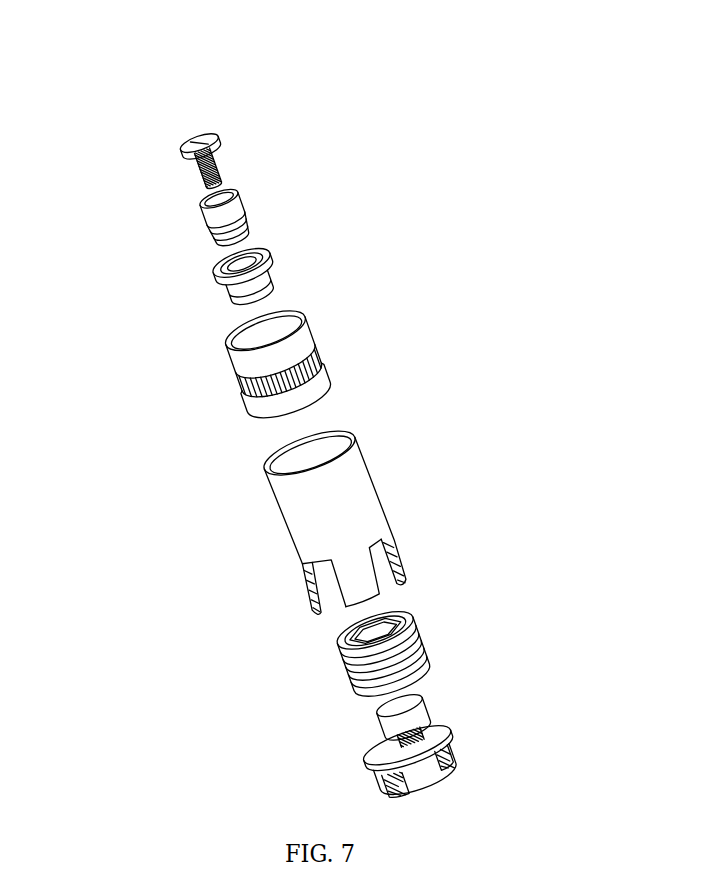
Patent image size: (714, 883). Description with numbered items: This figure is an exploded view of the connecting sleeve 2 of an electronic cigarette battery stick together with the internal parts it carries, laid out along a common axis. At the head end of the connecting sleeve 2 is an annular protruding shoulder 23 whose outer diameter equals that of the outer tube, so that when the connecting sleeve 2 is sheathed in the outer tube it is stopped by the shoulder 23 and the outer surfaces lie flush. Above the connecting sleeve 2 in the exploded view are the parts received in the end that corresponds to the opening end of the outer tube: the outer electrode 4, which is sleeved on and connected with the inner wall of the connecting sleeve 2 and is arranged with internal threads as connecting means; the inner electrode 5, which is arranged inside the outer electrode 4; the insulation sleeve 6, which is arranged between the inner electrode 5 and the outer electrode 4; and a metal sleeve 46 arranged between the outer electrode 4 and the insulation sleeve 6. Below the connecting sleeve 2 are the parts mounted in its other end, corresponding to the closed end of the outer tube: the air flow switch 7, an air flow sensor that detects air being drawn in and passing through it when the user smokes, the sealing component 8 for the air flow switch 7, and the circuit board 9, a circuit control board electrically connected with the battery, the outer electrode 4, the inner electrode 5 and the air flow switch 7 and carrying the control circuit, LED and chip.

The connecting sleeve 2 is at (390, 492).
The outer electrode 4 is at (317, 332).
The inner electrode 5 is at (228, 135).
The insulation sleeve 6 is at (255, 200).
The air flow switch 7 is at (363, 723).
The sealing component 8 is at (427, 623).
The circuit board 9 is at (470, 733).
The annular protruding shoulder 23 is at (257, 470).
The metal sleeve 46 is at (282, 251).